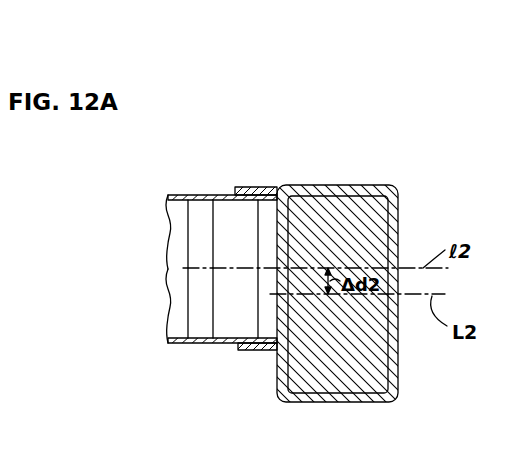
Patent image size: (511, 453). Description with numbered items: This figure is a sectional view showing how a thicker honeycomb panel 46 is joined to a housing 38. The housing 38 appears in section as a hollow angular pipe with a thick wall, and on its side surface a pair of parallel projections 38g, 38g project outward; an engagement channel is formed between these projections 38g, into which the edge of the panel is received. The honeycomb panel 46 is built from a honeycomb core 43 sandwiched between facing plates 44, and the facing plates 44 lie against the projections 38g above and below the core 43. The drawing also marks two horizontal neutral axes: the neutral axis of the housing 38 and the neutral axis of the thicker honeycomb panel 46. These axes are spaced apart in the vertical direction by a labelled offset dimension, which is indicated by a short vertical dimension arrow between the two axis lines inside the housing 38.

The housing 38 is at (345, 186).
The parallel projections 38g is at (266, 187).
The honeycomb core 43 is at (178, 233).
The facing plates 44 is at (215, 195).
The thicker honeycomb panel 46 is at (178, 300).